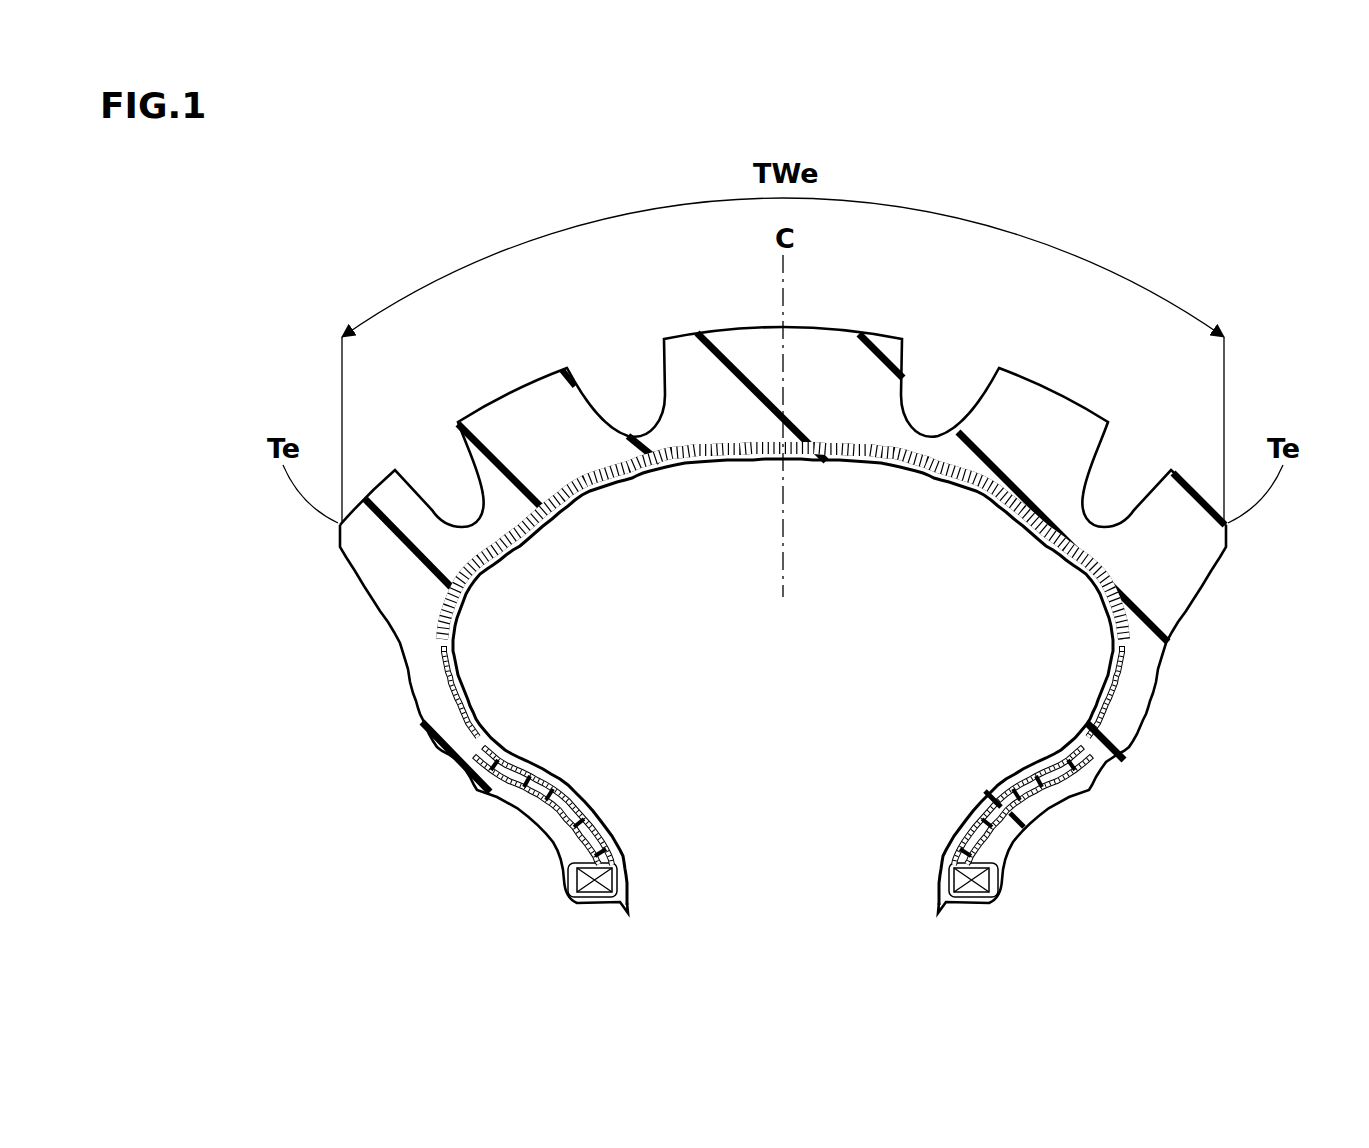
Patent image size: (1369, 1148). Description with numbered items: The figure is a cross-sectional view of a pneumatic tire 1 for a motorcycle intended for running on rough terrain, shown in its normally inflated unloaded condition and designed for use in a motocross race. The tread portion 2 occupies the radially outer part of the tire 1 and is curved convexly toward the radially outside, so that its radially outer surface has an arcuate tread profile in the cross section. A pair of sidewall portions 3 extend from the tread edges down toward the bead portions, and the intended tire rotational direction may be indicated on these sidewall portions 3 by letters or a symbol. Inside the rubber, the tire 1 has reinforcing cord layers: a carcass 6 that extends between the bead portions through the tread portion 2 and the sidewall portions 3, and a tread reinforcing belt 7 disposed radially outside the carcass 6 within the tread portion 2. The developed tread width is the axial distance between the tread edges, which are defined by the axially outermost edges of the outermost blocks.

The pneumatic tire 1 is at (783, 568).
The tread portion 2 is at (830, 322).
The sidewall portions 3 is at (410, 736).
The carcass 6 is at (712, 452).
The tread reinforcing belt 7 is at (853, 452).